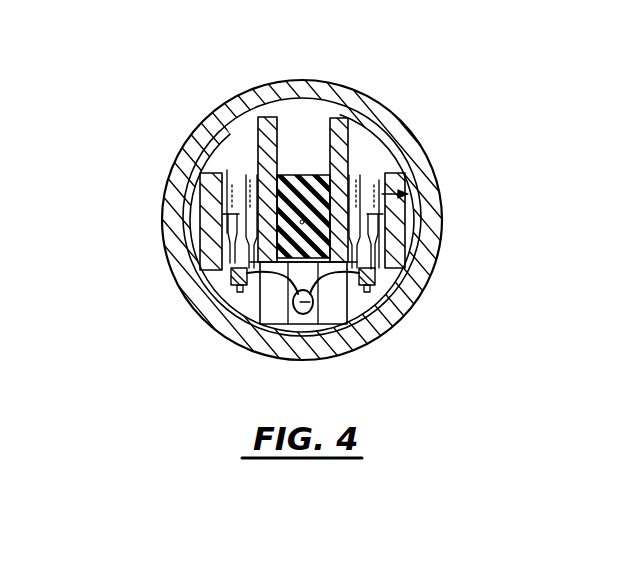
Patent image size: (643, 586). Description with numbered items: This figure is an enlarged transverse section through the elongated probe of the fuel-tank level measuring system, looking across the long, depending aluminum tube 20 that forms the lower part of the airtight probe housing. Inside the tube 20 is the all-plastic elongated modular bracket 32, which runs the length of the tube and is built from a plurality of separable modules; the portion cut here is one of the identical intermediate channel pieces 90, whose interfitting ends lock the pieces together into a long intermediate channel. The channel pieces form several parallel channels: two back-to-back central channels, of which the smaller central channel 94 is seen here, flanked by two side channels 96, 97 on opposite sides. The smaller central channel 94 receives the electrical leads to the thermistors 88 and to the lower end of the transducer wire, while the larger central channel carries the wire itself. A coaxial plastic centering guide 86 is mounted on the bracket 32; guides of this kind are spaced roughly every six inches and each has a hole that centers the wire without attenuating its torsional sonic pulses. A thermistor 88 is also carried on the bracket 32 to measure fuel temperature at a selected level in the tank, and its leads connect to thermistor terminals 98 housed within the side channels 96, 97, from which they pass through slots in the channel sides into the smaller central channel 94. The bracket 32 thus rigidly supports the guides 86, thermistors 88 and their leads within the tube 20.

The tube 20 is at (389, 121).
The modular bracket 32 is at (283, 133).
The centering guide 86 is at (213, 122).
The thermistor 88 is at (313, 292).
The intermediate channel piece 90 is at (405, 193).
The central channel 94 is at (328, 136).
The side channel 96 is at (230, 178).
The side channel 97 is at (386, 175).
The thermistor terminal 98 is at (202, 188).